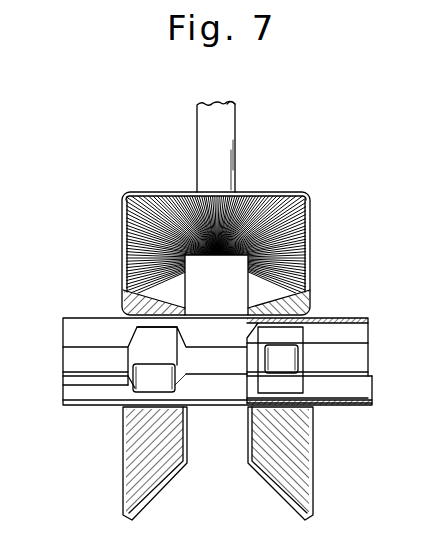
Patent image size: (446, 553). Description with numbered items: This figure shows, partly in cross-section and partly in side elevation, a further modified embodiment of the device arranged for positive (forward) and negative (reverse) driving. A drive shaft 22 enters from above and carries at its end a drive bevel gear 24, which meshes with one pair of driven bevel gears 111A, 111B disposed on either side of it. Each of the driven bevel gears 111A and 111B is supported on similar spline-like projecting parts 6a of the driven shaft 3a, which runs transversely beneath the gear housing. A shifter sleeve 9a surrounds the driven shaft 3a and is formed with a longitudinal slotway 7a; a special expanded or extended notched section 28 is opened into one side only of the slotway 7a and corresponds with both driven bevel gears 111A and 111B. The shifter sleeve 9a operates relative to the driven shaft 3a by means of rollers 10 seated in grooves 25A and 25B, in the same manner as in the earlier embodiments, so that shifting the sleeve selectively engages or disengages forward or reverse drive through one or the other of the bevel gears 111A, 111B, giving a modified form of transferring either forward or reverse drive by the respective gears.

The drive shaft 22 is at (236, 140).
The drive bevel gear 24 is at (250, 200).
The driven bevel gear 111A is at (122, 225).
The driven bevel gear 111B is at (311, 228).
The notched section 28 is at (175, 382).
The groove 25A is at (137, 352).
The groove 25B is at (314, 313).
The spline-like projecting parts 6a is at (73, 362).
The slotway 7a is at (82, 377).
The rollers 10 is at (125, 407).
The shifter sleeve 9a is at (338, 403).
The driven shaft 3a is at (353, 382).